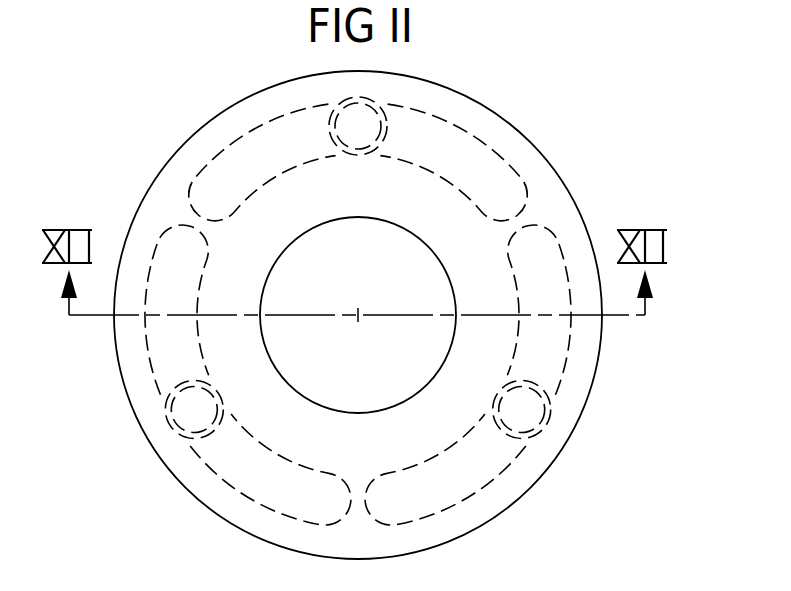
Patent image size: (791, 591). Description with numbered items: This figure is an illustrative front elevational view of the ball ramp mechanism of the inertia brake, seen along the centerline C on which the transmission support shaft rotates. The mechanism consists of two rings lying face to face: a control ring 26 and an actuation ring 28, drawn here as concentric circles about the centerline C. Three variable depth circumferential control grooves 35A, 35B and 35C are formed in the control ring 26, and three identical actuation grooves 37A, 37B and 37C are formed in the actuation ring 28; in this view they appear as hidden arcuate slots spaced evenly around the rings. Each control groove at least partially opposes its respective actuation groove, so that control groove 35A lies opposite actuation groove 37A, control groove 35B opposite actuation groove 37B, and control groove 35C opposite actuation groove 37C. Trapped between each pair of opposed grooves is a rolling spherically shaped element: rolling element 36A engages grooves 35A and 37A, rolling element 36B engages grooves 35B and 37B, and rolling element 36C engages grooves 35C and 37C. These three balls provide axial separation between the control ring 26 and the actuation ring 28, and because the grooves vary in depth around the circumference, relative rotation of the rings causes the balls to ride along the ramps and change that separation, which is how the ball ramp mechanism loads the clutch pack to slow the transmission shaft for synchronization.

The control ring 26 is at (570, 195).
The actuation ring 28 is at (547, 157).
The centerline C is at (358, 315).
The control groove 35A is at (483, 157).
The control groove 35B is at (498, 470).
The control groove 35C is at (153, 343).
The rolling spherically shaped element 36A is at (381, 119).
The rolling spherically shaped element 36B is at (535, 417).
The rolling spherically shaped element 36C is at (185, 417).
The actuation groove 37A is at (287, 128).
The actuation groove 37B is at (553, 250).
The actuation groove 37C is at (243, 482).